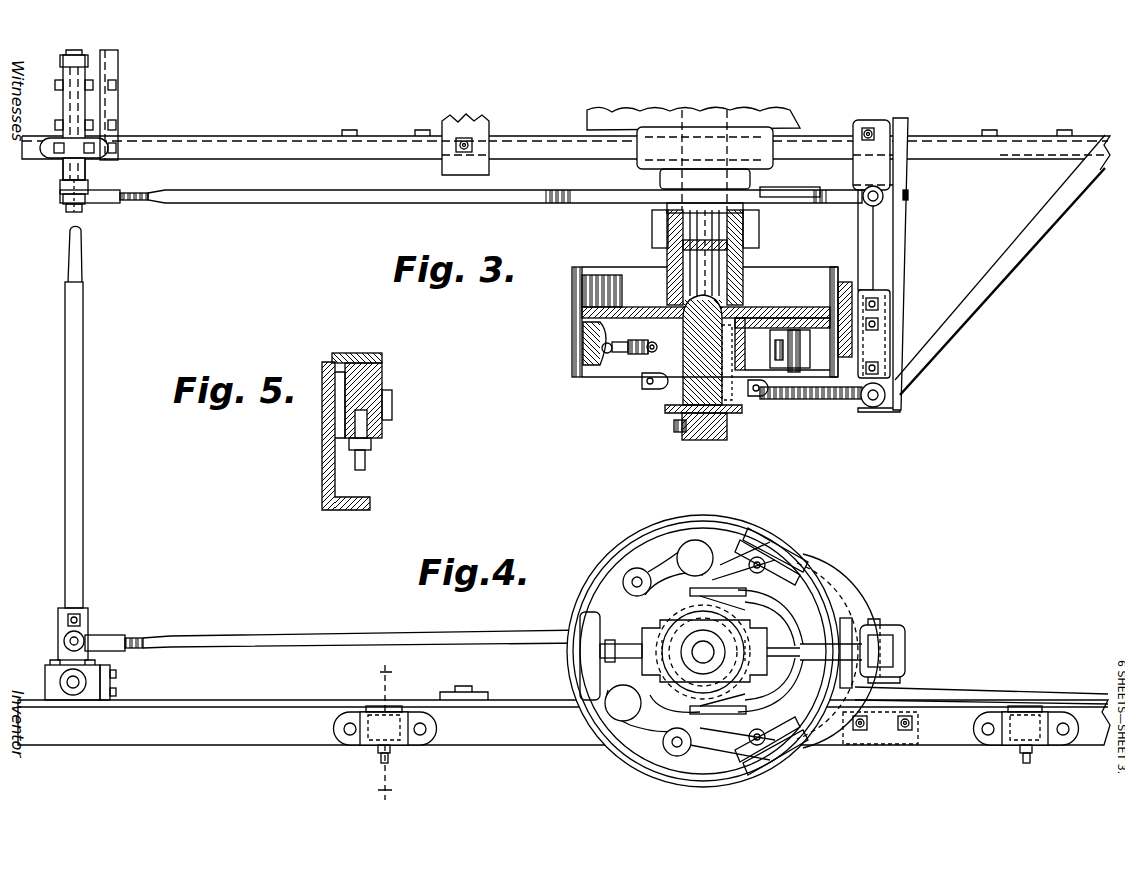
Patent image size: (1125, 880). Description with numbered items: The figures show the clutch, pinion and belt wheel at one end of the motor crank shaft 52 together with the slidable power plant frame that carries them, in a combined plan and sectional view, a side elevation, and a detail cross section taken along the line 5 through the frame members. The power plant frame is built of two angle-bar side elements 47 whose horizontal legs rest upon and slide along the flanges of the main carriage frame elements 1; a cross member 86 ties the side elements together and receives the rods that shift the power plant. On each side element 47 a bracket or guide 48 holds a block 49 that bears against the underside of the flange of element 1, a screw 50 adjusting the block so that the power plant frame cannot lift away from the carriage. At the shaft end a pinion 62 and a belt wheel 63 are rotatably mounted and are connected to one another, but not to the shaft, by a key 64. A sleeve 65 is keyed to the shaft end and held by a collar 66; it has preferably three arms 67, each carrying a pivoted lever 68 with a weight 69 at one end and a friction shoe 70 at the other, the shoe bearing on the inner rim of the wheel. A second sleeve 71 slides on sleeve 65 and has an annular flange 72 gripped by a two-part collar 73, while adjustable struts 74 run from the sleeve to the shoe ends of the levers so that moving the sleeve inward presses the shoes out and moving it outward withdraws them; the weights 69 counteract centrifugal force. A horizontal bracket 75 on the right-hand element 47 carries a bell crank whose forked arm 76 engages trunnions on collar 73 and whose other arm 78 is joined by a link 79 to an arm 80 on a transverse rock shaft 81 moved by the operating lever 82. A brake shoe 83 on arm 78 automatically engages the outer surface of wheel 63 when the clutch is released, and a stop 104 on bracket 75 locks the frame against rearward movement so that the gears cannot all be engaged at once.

In FIG. 5, the main carriage frame element 1 is at (330, 405).
In FIG. 4, the section line 5— 5 is at (385, 734).
In FIG. 3, the power plant frame side element 47 is at (255, 141).
In FIG. 5, the power plant frame side element 47 is at (362, 357).
In FIG. 4, the power plant frame side element 47 is at (284, 707).
In FIG. 5, the bracket or guide 48 is at (330, 440).
In FIG. 4, the bracket or guide 48 is at (362, 745).
In FIG. 5, the block 49 is at (382, 385).
In FIG. 4, the block 49 is at (378, 712).
In FIG. 5, the screw 50 is at (366, 462).
In FIG. 4, the screw 50 is at (1043, 765).
In FIG. 3, the crank shaft 52 is at (695, 285).
In FIG. 4, the crank shaft 52 is at (700, 650).
In FIG. 3, the pinion 62 is at (758, 230).
In FIG. 3, the belt wheel 63 is at (572, 285).
In FIG. 4, the belt wheel 63 is at (758, 522).
In FIG. 3, the key 64 is at (665, 262).
In FIG. 3, the sleeve 65 is at (690, 395).
In FIG. 3, the collar 66 is at (727, 422).
In FIG. 3, the arm 67 is at (775, 318).
In FIG. 4, the arm 67 is at (638, 568).
In FIG. 3, the lever 68 is at (820, 330).
In FIG. 4, the lever 68 is at (665, 560).
In FIG. 4, the weight 69 is at (705, 545).
In FIG. 3, the shoe 70 is at (575, 345).
In FIG. 4, the shoe 70 is at (780, 548).
In FIG. 3, the second sleeve 71 is at (650, 360).
In FIG. 4, the second sleeve 71 is at (740, 598).
In FIG. 3, the annular flange or rib 72 is at (680, 375).
In FIG. 3, the collar 73 is at (758, 398).
In FIG. 4, the collar 73 is at (660, 675).
In FIG. 3, the strut or thrust connection 74 is at (620, 360).
In FIG. 4, the strut or thrust connection 74 is at (632, 660).
In FIG. 3, the horizontal bracket 75 is at (908, 222).
In FIG. 4, the horizontal bracket 75 is at (895, 687).
In FIG. 4, the bell crank arm 76 is at (820, 605).
In FIG. 3, the bell crank arm 78 is at (872, 236).
In FIG. 3, the link 79 is at (606, 196).
In FIG. 4, the link 79 is at (345, 636).
In FIG. 3, the arm 80 is at (62, 196).
In FIG. 4, the arm 80 is at (68, 658).
In FIG. 3, the rock shaft 81 is at (92, 166).
In FIG. 4, the rock shaft 81 is at (70, 680).
In FIG. 3, the operating lever 82 is at (68, 62).
In FIG. 4, the operating lever 82 is at (84, 322).
In FIG. 3, the brake shoe 83 is at (845, 282).
In FIG. 4, the brake shoe 83 is at (860, 618).
In FIG. 3, the cross member 86 is at (462, 119).
In FIG. 3, the stop 104 is at (810, 190).
In FIG. 4, the stop 104 is at (853, 726).